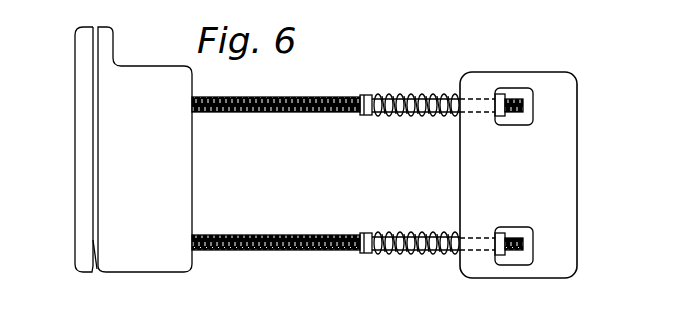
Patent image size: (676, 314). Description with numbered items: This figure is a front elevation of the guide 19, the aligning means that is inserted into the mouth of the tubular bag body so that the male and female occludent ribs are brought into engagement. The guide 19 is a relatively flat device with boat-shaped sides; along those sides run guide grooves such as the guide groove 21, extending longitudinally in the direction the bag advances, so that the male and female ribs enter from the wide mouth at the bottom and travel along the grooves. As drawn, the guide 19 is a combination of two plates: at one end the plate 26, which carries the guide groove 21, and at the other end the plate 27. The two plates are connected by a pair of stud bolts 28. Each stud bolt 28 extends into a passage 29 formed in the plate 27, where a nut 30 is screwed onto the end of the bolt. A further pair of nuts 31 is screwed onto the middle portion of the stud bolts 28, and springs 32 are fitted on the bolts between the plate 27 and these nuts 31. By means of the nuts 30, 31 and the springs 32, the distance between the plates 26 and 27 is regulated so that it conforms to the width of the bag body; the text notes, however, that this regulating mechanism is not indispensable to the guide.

The guide 19 is at (303, 181).
The guide groove 21 is at (98, 88).
The plate 26 is at (190, 167).
The plate 27 is at (460, 168).
The stud bolt 28 is at (267, 97).
The passage 29 is at (527, 88).
The nut 30 is at (500, 90).
The nut 31 is at (364, 95).
The spring 32 is at (408, 95).